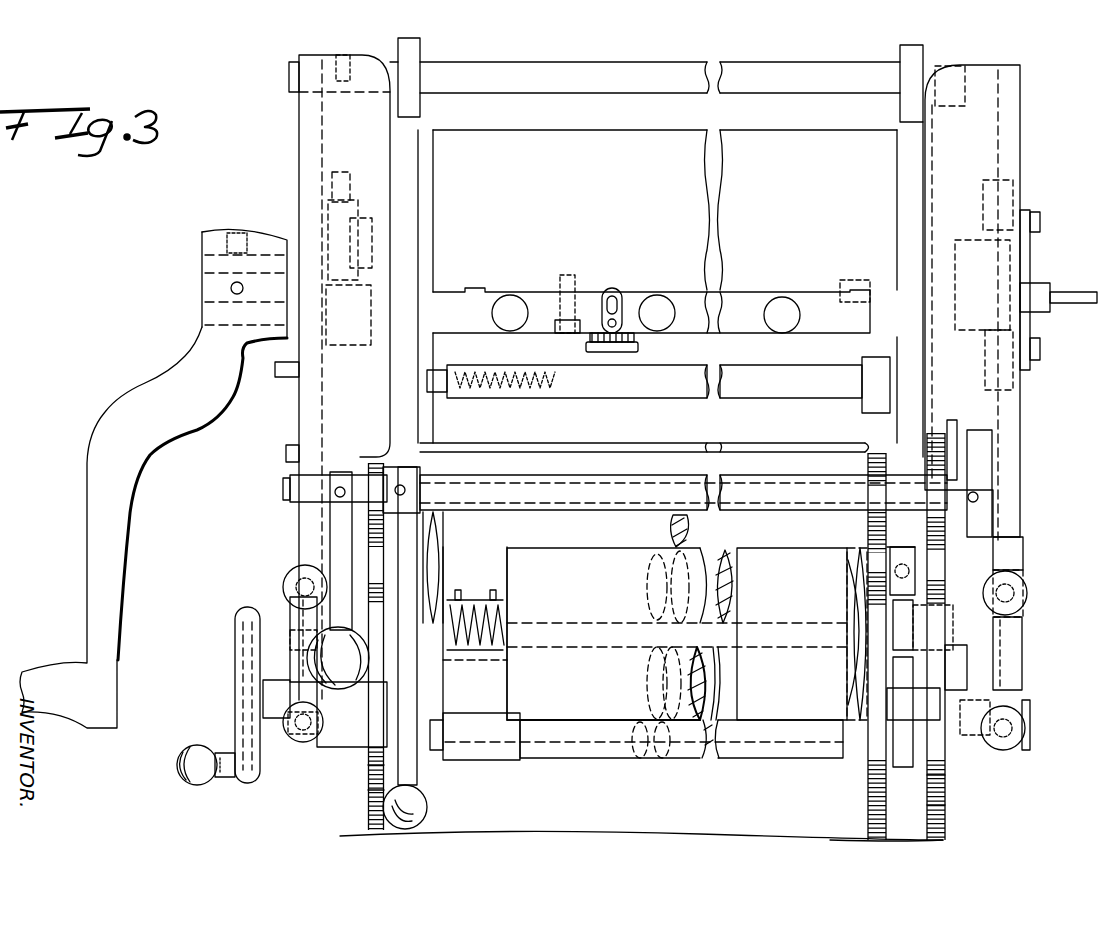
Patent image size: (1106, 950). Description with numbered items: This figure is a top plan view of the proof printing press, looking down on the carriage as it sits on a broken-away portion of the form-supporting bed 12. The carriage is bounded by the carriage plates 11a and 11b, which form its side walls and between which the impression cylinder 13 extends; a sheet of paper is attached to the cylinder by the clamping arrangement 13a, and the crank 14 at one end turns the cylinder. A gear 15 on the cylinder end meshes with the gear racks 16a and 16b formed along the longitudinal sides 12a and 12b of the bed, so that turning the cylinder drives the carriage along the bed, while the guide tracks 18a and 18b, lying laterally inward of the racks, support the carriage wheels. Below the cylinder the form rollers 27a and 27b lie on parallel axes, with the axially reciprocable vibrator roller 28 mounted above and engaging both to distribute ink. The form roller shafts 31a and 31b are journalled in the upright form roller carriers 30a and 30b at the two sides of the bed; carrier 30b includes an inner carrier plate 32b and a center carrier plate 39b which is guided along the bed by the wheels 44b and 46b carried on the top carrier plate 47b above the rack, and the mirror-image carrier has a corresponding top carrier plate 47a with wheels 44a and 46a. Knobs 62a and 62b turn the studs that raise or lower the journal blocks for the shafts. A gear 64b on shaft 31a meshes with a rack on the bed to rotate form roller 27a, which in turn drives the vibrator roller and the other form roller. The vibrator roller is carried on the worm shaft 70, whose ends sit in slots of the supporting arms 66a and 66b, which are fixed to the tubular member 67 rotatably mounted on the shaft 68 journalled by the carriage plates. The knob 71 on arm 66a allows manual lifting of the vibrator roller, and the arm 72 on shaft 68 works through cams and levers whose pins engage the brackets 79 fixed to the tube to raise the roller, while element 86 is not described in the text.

The carriage plate 11a is at (299, 168).
The carriage plate 11b is at (1023, 158).
The impression cylinder 13 is at (605, 142).
The clamping arrangement 13a is at (627, 290).
The crank 14 is at (113, 400).
The gear 15 is at (235, 683).
The tubular member 67 is at (447, 472).
The shaft 68 is at (299, 454).
The form roller shaft 31a is at (299, 514).
The form roller shaft 31b is at (370, 768).
The inner carrier plate 32b is at (980, 760).
The arm 72 is at (343, 598).
The knob 71 is at (418, 812).
The bracket 79 is at (290, 562).
The form roller carrier 30a is at (290, 610).
The form roller carrier 30b is at (1023, 634).
The top carrier plate 47a is at (378, 695).
The top carrier plate 47b is at (948, 690).
The knob 62a is at (310, 772).
The knob 62b is at (1026, 600).
The vibrator roller supporting arm 66a is at (422, 606).
The vibrator roller supporting arm 66b is at (852, 674).
The form roller 27a is at (520, 543).
The form roller 27b is at (508, 690).
The worm shaft 70 is at (490, 615).
The wheel 46a is at (520, 668).
The wheel 46b is at (905, 665).
The vibrator roller 28 is at (600, 540).
The bed 12 is at (660, 812).
The longitudinal side of bed 12a is at (368, 778).
The longitudinal side of bed 12b is at (945, 784).
The gear rack 16a is at (372, 792).
The gear rack 16b is at (945, 806).
The guide track 18a is at (370, 836).
The guide track 18b is at (920, 844).
The wheel 44a is at (432, 736).
The wheel 44b is at (903, 768).
The gear 64b is at (848, 638).
The block 86 is at (1008, 652).
The center carrier plate 39b is at (1026, 740).